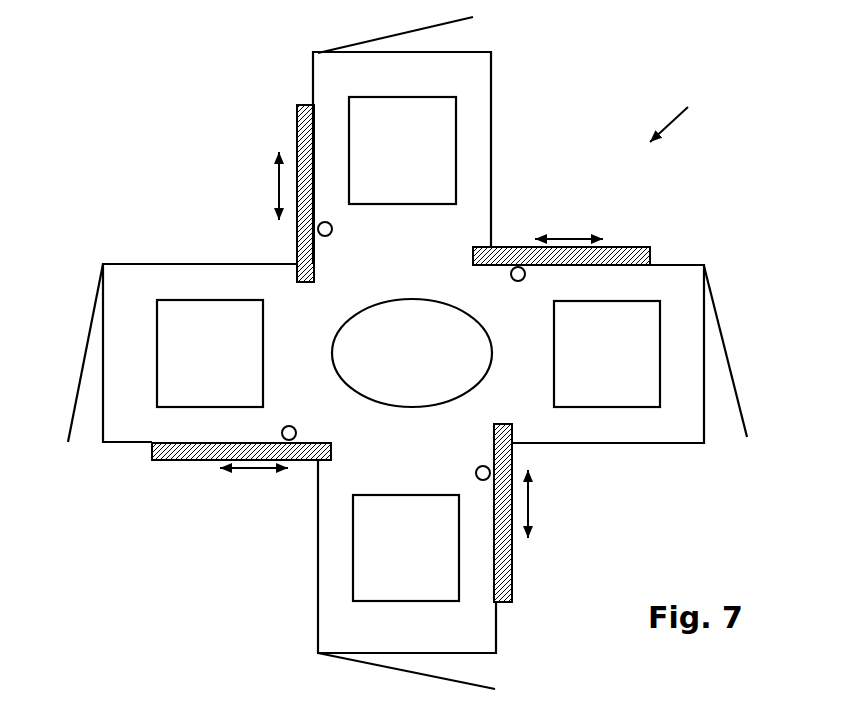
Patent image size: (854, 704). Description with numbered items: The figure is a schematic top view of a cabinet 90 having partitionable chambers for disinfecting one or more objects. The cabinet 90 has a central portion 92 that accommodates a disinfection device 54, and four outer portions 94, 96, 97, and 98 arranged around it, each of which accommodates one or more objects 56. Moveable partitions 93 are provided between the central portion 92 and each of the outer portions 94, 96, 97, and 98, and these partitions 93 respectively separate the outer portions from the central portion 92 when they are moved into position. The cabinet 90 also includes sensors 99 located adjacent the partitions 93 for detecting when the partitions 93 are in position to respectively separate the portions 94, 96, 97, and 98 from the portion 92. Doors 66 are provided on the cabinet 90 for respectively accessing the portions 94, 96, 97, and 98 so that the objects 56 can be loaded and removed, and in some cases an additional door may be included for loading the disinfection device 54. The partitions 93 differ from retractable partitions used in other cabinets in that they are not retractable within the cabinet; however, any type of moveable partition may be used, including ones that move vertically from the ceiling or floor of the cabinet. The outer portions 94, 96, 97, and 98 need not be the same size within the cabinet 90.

The disinfection device 54 is at (427, 363).
The objects 56 is at (416, 164).
The doors 66 is at (352, 46).
The cabinet 90 is at (684, 119).
The portion 92 is at (403, 352).
The moveable partitions 93 is at (308, 148).
The portion 94 is at (472, 125).
The portion 96 is at (675, 423).
The portion 97 is at (328, 600).
The portion 98 is at (119, 310).
The sensors 99 is at (331, 234).